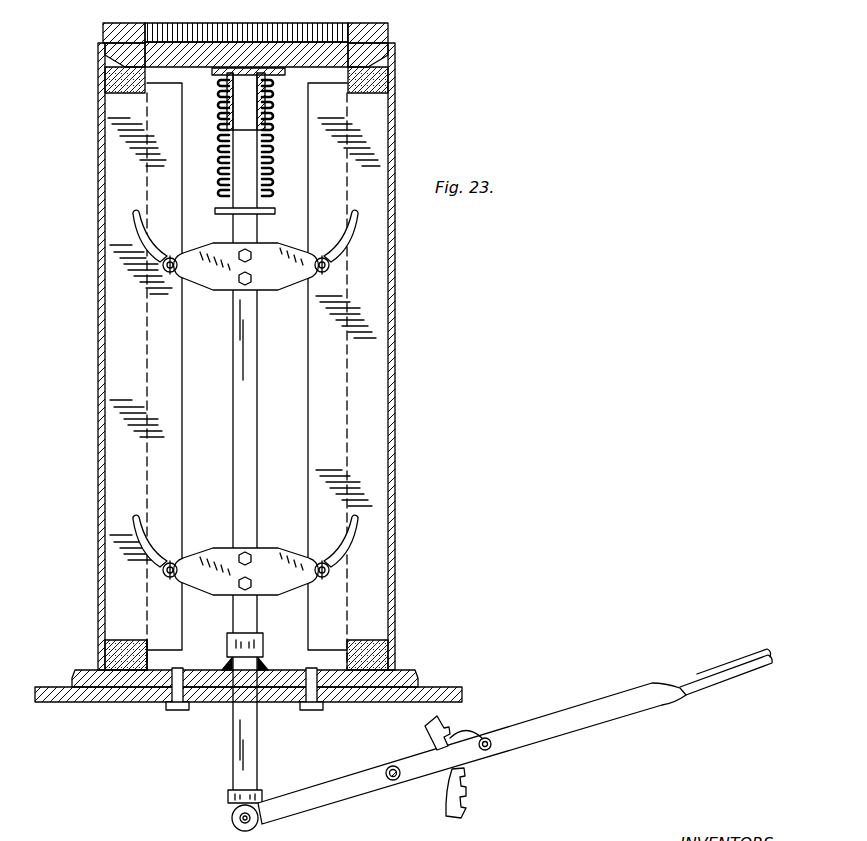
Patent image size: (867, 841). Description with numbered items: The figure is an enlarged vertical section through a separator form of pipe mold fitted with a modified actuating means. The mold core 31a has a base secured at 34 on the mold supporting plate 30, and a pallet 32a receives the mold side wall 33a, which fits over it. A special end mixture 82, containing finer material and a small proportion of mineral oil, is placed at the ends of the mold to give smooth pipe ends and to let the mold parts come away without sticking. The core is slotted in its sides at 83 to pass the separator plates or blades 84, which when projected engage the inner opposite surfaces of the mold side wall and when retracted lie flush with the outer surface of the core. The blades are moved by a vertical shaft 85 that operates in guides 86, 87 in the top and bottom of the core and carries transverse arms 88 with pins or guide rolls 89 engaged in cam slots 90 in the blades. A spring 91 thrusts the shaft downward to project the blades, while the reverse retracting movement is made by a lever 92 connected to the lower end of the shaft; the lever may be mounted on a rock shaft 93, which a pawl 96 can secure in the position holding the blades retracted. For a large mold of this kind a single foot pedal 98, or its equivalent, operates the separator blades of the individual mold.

The mold supporting plate 30 is at (448, 688).
The core 31a is at (107, 642).
The pallet 32a is at (422, 652).
The mold side wall 33a is at (95, 241).
The base securing means 34 is at (180, 711).
The special end mixture 82 is at (395, 76).
The slots 83 is at (143, 122).
The separator plates or blades 84 is at (372, 300).
The vertical shafts 85 is at (257, 376).
The guide 86 is at (227, 148).
The guide 87 is at (263, 665).
The transverse arms 88 is at (226, 284).
The pins or guide rolls 89 is at (184, 588).
The cam slots 90 is at (345, 242).
The springs 91 is at (265, 192).
The levers 92 is at (304, 808).
The rock shaft 93 is at (393, 781).
The pawl 96 is at (470, 731).
The foot pedal 98 is at (612, 700).